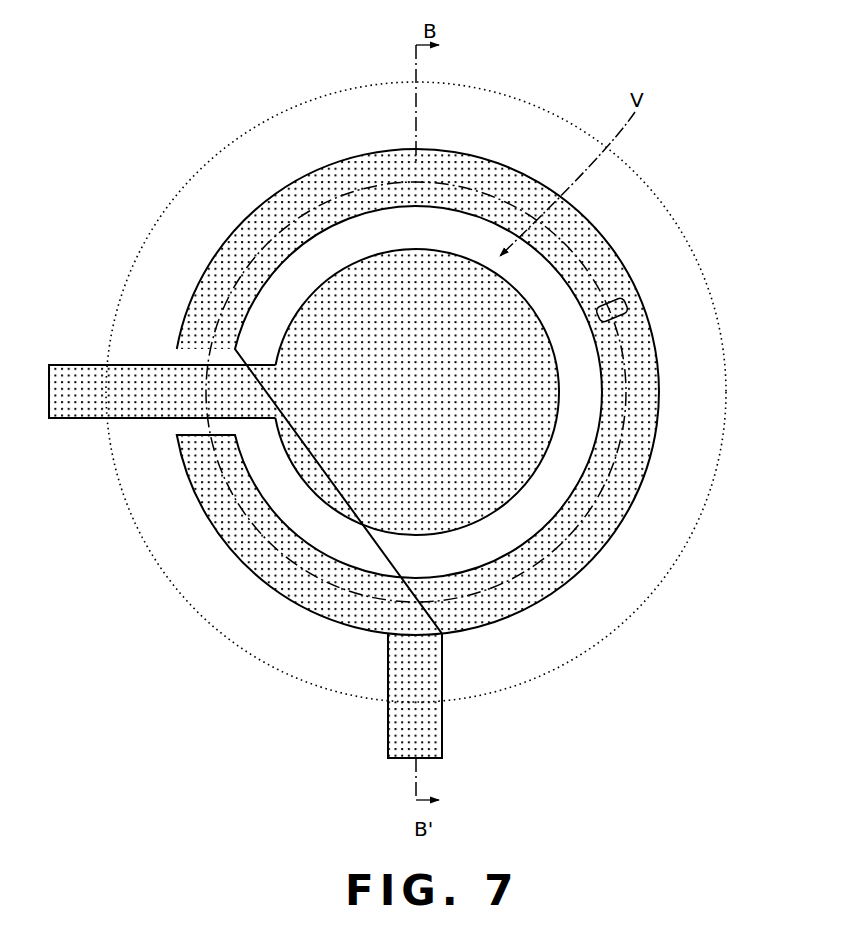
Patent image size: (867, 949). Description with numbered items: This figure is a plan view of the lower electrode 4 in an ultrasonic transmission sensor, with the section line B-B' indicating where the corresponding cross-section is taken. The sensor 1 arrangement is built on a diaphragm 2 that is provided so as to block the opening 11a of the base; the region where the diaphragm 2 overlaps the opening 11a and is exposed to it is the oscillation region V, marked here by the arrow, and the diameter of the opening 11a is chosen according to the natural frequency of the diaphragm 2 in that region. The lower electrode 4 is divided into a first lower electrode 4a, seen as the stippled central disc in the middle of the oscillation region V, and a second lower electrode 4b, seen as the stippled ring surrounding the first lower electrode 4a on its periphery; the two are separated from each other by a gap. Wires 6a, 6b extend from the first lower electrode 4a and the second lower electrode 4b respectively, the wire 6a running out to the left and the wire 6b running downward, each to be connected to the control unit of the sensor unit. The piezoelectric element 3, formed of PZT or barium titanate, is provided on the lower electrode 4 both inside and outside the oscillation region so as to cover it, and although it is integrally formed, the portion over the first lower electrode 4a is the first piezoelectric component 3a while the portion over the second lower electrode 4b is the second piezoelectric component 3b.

The piezoelectric vibrating element 1 is at (433, 397).
The diaphragm 2 is at (178, 131).
The piezoelectric element 3 is at (693, 243).
The first piezoelectric component 3a is at (337, 467).
The second piezoelectric component 3b is at (320, 618).
The lower electrode 4 is at (497, 392).
The first lower electrode 4a is at (556, 379).
The second lower electrode 4b is at (633, 427).
The wire 6a is at (73, 408).
The wire 6b is at (432, 727).
The opening 11a is at (643, 305).